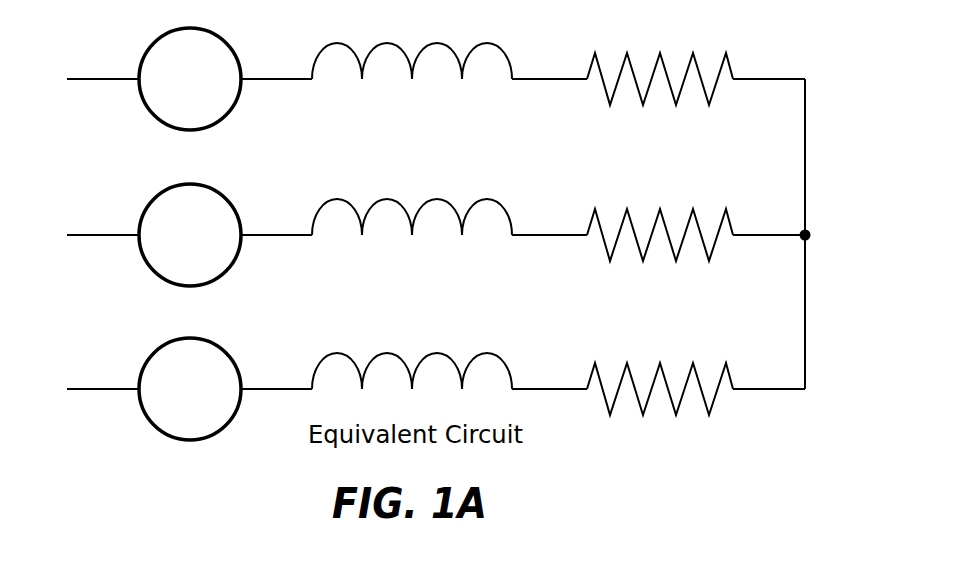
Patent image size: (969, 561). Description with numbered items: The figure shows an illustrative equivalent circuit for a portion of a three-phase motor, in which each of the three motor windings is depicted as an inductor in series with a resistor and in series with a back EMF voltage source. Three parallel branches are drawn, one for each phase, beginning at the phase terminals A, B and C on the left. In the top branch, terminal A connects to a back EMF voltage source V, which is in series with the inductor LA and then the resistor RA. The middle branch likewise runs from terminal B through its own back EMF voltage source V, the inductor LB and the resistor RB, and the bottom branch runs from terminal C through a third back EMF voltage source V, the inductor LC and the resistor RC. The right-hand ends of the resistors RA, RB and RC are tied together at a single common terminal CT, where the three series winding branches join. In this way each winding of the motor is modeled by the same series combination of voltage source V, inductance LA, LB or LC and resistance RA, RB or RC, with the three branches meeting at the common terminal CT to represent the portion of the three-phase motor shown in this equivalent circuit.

The winding A phase terminal A is at (88, 79).
The winding B phase terminal B is at (88, 235).
The winding C phase terminal C is at (88, 389).
The back EMF voltage source V is at (190, 234).
The inductor of winding A LA is at (412, 46).
The inductor of winding B LB is at (412, 202).
The inductor of winding C LC is at (412, 356).
The resistor of winding A RA is at (660, 59).
The resistor of winding B RB is at (660, 215).
The resistor of winding C RC is at (660, 369).
The common terminal CT is at (806, 212).